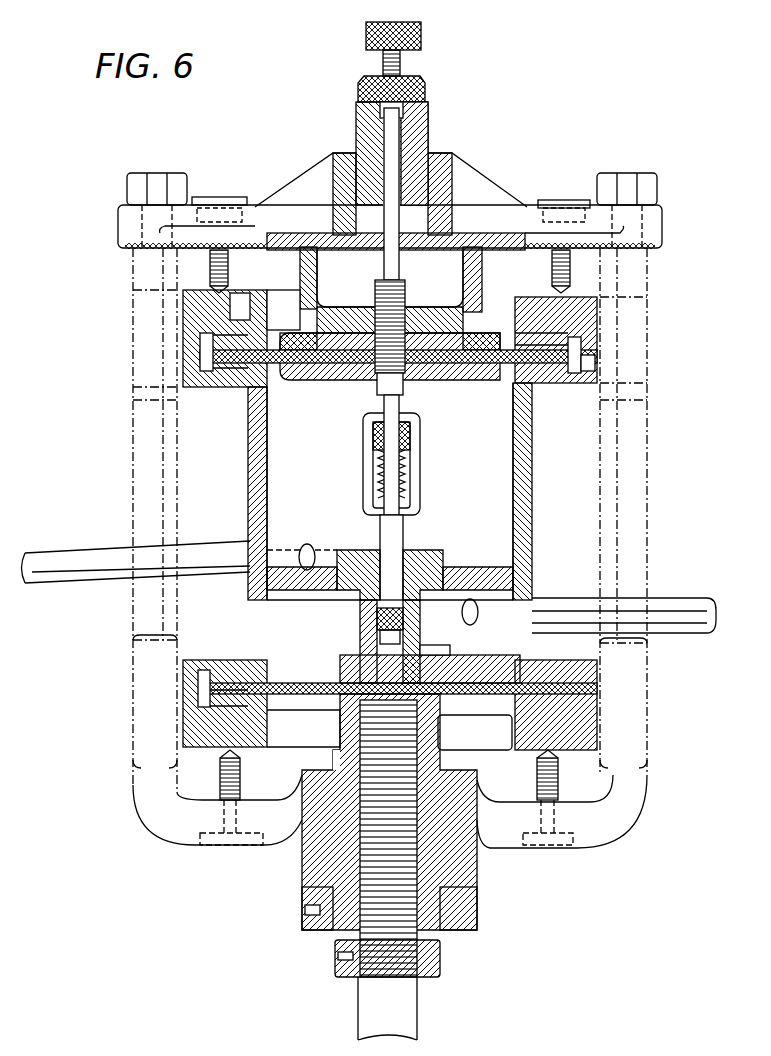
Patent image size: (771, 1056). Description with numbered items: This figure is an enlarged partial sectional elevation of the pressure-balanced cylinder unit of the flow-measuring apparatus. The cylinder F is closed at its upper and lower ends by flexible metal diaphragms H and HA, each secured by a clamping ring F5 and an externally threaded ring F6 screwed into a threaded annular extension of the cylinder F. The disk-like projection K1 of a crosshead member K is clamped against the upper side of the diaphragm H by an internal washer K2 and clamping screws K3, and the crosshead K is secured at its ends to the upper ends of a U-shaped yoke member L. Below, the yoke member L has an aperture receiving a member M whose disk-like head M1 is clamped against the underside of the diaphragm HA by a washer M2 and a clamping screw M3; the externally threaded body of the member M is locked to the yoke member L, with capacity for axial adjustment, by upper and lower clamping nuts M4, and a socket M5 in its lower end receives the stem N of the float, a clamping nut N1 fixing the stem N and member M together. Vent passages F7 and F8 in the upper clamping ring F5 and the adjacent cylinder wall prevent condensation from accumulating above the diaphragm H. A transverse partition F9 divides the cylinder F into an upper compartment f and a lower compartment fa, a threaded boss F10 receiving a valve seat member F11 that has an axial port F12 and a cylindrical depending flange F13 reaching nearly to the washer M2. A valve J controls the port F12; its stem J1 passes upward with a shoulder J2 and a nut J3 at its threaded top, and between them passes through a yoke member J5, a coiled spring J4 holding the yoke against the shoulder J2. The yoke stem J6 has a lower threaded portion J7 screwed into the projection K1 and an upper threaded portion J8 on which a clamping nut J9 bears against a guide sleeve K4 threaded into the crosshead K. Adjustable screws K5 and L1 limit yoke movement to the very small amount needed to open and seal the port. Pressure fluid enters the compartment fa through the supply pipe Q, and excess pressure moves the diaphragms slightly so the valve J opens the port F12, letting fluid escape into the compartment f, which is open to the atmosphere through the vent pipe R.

The threaded portion J8 is at (402, 66).
The clamping nut J9 is at (425, 90).
The guide sleeve K4 is at (428, 128).
The crosshead member K is at (390, 232).
The adjustable screw K5 is at (228, 270).
The disk-like projection K1 is at (336, 313).
The lower threaded portion J7 is at (400, 292).
The externally threaded ring F6 is at (200, 333).
The clamping ring F5 is at (200, 360).
The vent passage F7 is at (582, 345).
The vent passage F8 is at (597, 365).
The diaphragm H is at (281, 372).
The internal washer K2 is at (375, 376).
The stem J6 is at (410, 383).
The clamping screw K3 is at (490, 380).
The U-shaped yoke member L is at (177, 422).
The cylinder F is at (247, 440).
The upper compartment f is at (390, 491).
The nut or head J3 is at (375, 443).
The yoke member J5 is at (412, 457).
The coiled spring J4 is at (400, 480).
The vent pipe R is at (72, 558).
The shoulder J2 is at (381, 522).
The valve stem J1 is at (402, 537).
The partition boss F10 is at (447, 547).
The transverse web or partition F9 is at (480, 560).
The pressure supply pipe Q is at (684, 608).
The lower compartment fa is at (390, 621).
The axial port F12 is at (376, 603).
The valve seat member F11 is at (425, 607).
The cylindrical depending flange F13 is at (378, 622).
The valve J is at (357, 643).
The clamping screw M3 is at (444, 620).
The washer M2 is at (460, 672).
The diaphragm HA is at (303, 728).
The disk-like head M1 is at (475, 732).
The adjustable screw L1 is at (218, 770).
The clamping nut M4 is at (475, 778).
The member M is at (472, 863).
The socket M5 is at (360, 917).
The clamping nut N1 is at (442, 962).
The stem N is at (387, 870).